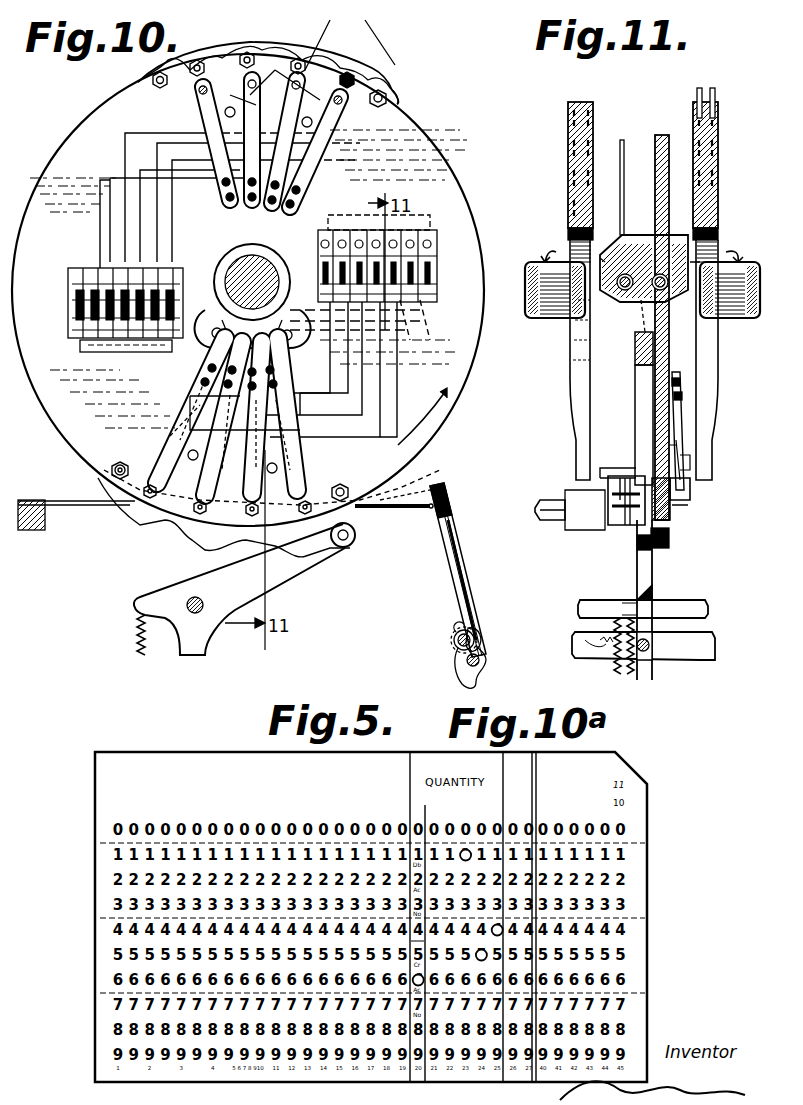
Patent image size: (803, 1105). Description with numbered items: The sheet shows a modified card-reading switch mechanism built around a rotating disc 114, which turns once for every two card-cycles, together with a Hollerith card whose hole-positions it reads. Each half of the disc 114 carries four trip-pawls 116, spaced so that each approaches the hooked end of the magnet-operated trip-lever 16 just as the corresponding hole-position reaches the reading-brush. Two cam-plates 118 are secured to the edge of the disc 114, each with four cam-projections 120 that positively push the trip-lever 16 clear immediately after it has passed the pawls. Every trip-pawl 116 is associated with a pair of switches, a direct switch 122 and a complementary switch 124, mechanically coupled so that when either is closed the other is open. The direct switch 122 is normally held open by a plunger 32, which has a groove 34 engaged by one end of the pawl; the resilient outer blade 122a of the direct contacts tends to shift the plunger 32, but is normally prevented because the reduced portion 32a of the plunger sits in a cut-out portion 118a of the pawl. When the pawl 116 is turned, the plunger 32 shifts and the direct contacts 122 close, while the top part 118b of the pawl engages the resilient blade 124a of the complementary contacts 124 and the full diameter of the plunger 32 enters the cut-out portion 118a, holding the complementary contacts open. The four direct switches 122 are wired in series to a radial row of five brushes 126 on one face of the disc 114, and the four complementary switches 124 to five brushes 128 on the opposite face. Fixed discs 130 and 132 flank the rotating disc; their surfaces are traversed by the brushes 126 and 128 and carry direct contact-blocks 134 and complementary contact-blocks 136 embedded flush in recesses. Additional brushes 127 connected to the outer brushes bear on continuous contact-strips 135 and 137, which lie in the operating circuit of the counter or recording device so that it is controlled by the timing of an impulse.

In FIG. 10, the trip-lever 16 is at (300, 560).
In FIG. 11, the trip-lever 16 is at (654, 580).
In FIG. 10a, the plunger 32 is at (462, 656).
In FIG. 11, the plunger 32 is at (680, 498).
In FIG. 10a, the reduced portion 32a is at (452, 645).
In FIG. 11, the reduced portion 32a is at (590, 503).
In FIG. 11, the groove 34 is at (625, 478).
In FIG. 10, the disc 114 is at (468, 358).
In FIG. 11, the disc 114 is at (672, 346).
In FIG. 10, the trip-pawl 116 is at (135, 550).
In FIG. 10a, the trip-pawl 116 is at (481, 668).
In FIG. 11, the trip-pawl 116 is at (636, 542).
In FIG. 10, the cam-plate 118 is at (392, 90).
In FIG. 11, the cam-plate 118 is at (670, 540).
In FIG. 10a, the cut-out portion 118a is at (478, 637).
In FIG. 10a, the top part 118b is at (458, 630).
In FIG. 10, the cam-projection 120 is at (380, 60).
In FIG. 10, the direct switch 122 is at (198, 100).
In FIG. 11, the direct switch 122 is at (682, 466).
In FIG. 10, the outer blade 122a is at (285, 372).
In FIG. 11, the outer blade 122a is at (684, 430).
In FIG. 10, the complementary switch 124 is at (175, 425).
In FIG. 10a, the complementary switch 124 is at (470, 600).
In FIG. 11, the complementary switch 124 is at (638, 448).
In FIG. 10, the resilient blade 124a is at (292, 418).
In FIG. 10a, the resilient blade 124a is at (462, 548).
In FIG. 10, the brush 126 is at (436, 235).
In FIG. 11, the brush 126 is at (715, 262).
In FIG. 10, the additional brush 127 is at (404, 276).
In FIG. 11, the brush 128 is at (570, 262).
In FIG. 11, the fixed disc 130 is at (712, 372).
In FIG. 11, the fixed disc 132 is at (580, 352).
In FIG. 11, the direct contact-block 134 is at (568, 182).
In FIG. 11, the contact-strip 135 is at (570, 125).
In FIG. 11, the complementary contact-block 136 is at (595, 165).
In FIG. 11, the contact-strip 137 is at (595, 120).